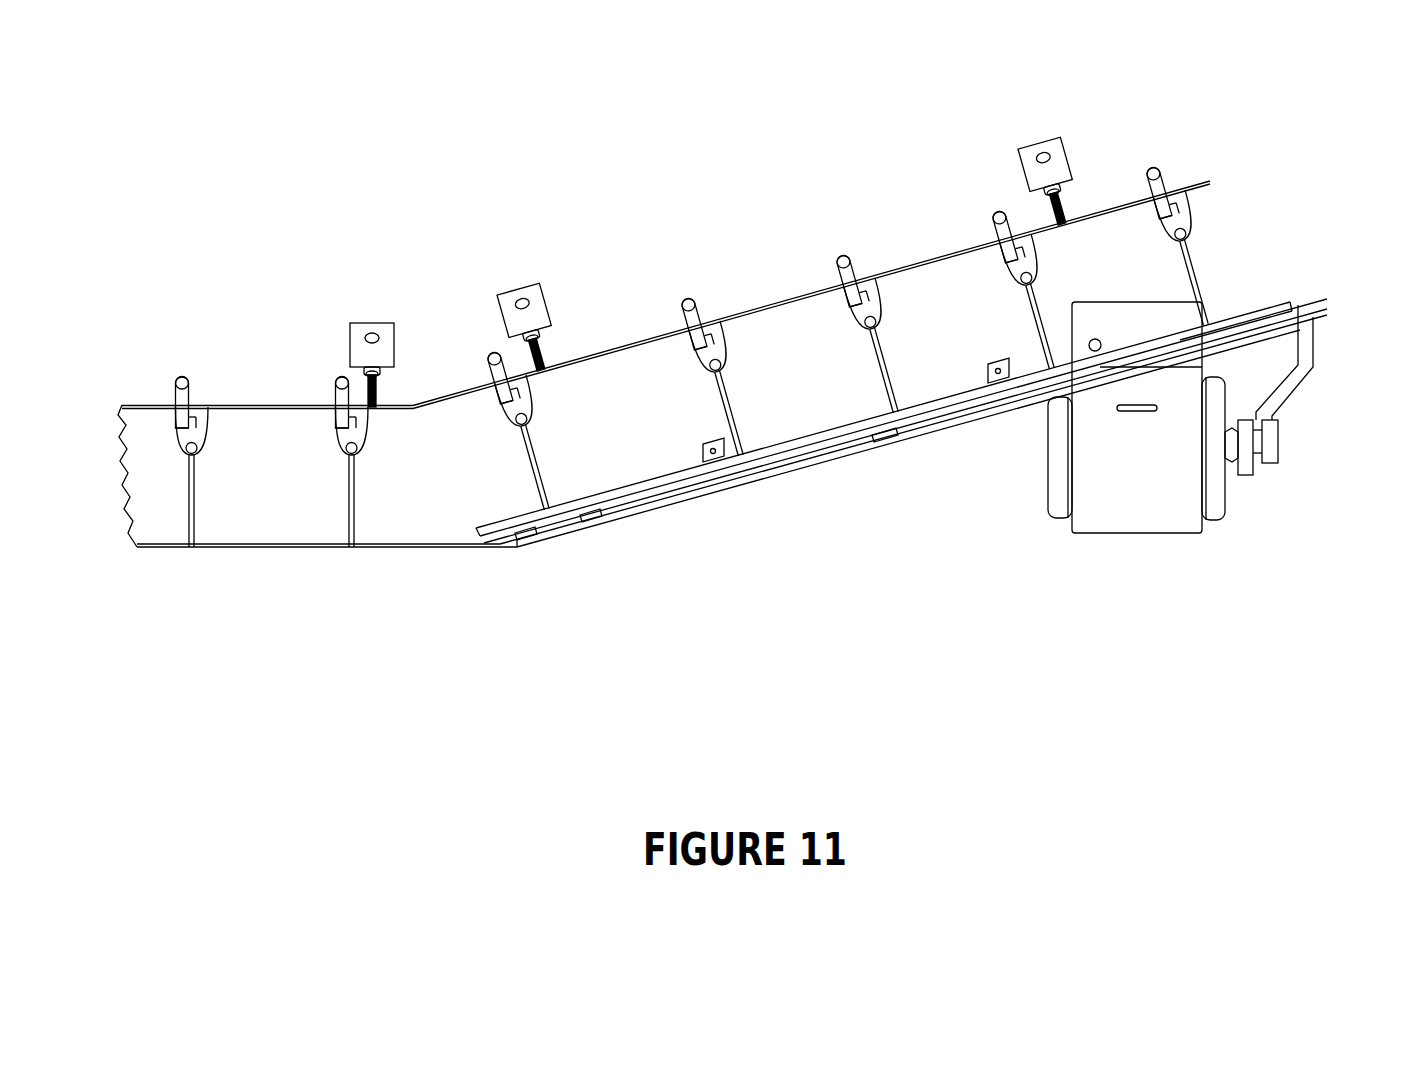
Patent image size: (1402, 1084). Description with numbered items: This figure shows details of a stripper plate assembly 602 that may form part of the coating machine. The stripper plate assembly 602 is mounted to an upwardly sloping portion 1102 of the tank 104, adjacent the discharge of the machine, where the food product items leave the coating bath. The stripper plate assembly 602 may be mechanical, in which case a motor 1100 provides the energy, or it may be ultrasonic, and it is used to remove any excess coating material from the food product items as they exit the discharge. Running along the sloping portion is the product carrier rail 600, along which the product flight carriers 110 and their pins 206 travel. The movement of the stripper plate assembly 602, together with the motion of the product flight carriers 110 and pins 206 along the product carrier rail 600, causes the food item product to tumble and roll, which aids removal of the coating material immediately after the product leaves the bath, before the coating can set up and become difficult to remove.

The product flight carrier 110 is at (184, 467).
The pin 206 is at (192, 503).
The product carrier rail 600 is at (632, 343).
The stripper plate assembly 602 is at (1244, 305).
The tank 104 is at (480, 550).
The upwardly sloping portion 1102 is at (803, 462).
The motor 1100 is at (1154, 537).